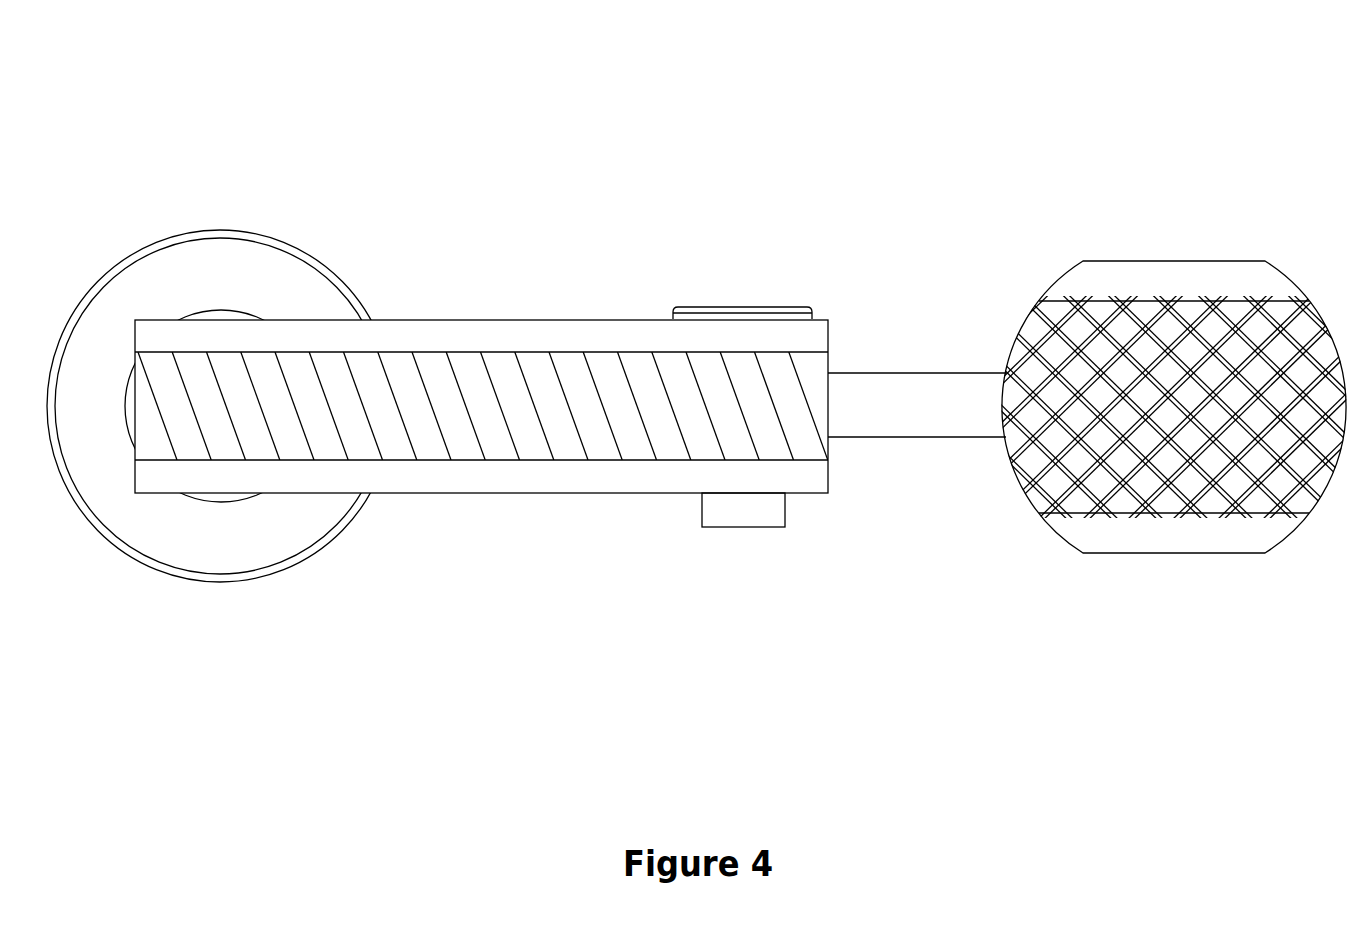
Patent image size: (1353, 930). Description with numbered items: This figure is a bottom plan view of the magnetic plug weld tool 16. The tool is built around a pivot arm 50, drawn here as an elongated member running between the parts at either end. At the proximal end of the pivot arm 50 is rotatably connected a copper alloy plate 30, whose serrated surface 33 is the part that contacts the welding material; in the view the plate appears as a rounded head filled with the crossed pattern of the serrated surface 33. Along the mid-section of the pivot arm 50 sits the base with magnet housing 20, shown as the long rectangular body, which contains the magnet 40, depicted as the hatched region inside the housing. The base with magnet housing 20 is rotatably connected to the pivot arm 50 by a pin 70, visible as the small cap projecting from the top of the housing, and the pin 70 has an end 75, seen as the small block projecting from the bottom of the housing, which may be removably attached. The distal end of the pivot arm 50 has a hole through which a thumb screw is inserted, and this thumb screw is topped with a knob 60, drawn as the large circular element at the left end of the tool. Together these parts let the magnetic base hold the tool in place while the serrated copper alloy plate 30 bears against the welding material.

The magnetic plug weld tool 16 is at (737, 160).
The base with magnet housing 20 is at (457, 332).
The magnet 40 is at (599, 407).
The pin 70 is at (765, 297).
The end 75 is at (772, 540).
The pivot arm 50 is at (900, 353).
The copper alloy plate 30 is at (1125, 538).
The serrated surface 33 is at (1187, 347).
The knob 60 is at (200, 550).